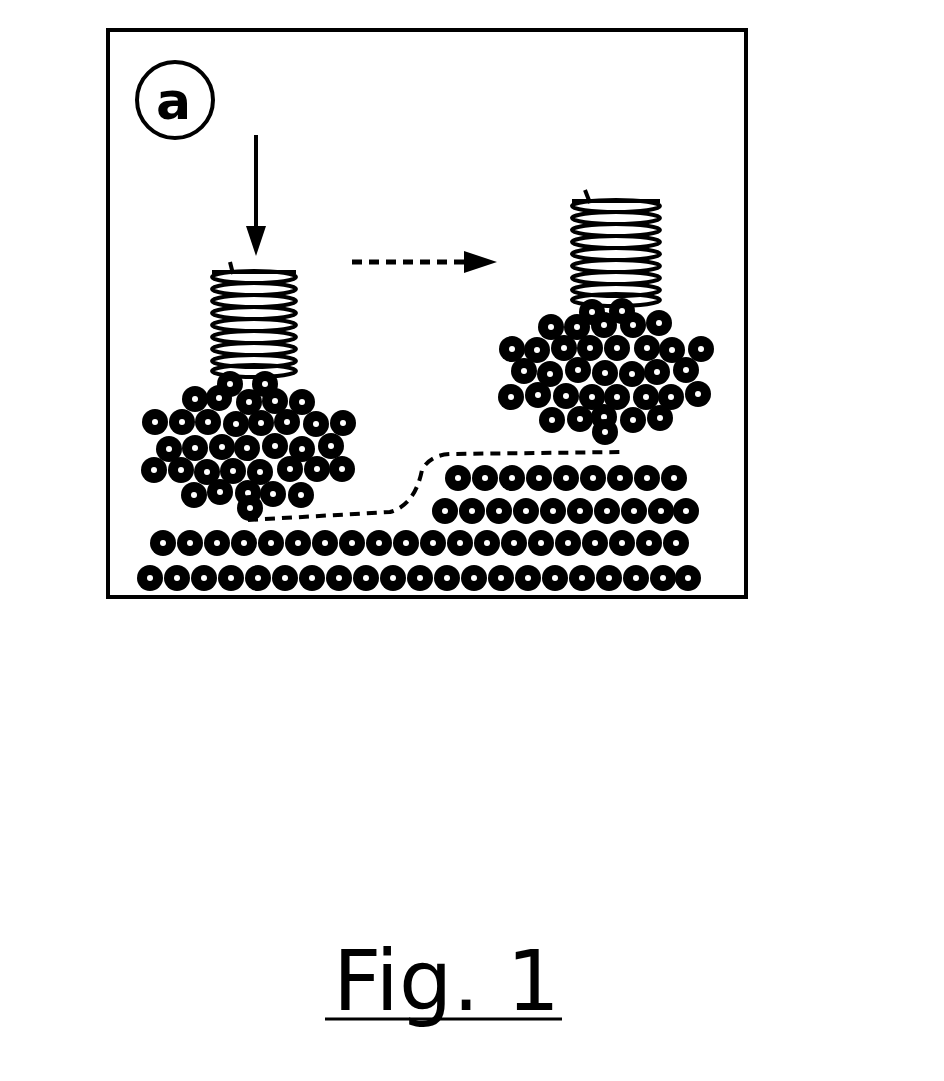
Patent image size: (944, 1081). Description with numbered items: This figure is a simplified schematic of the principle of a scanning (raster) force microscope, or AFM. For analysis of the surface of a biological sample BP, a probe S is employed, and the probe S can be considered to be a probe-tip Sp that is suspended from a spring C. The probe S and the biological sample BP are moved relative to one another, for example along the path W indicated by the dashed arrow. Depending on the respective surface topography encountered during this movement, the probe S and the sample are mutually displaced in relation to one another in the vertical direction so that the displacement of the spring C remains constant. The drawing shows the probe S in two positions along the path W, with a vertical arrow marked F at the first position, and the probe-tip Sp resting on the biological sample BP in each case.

The force F is at (232, 173).
The probe S is at (188, 325).
The spring C is at (308, 272).
The path W is at (418, 258).
The probe-tip Sp is at (778, 368).
The biological sample BP is at (560, 597).